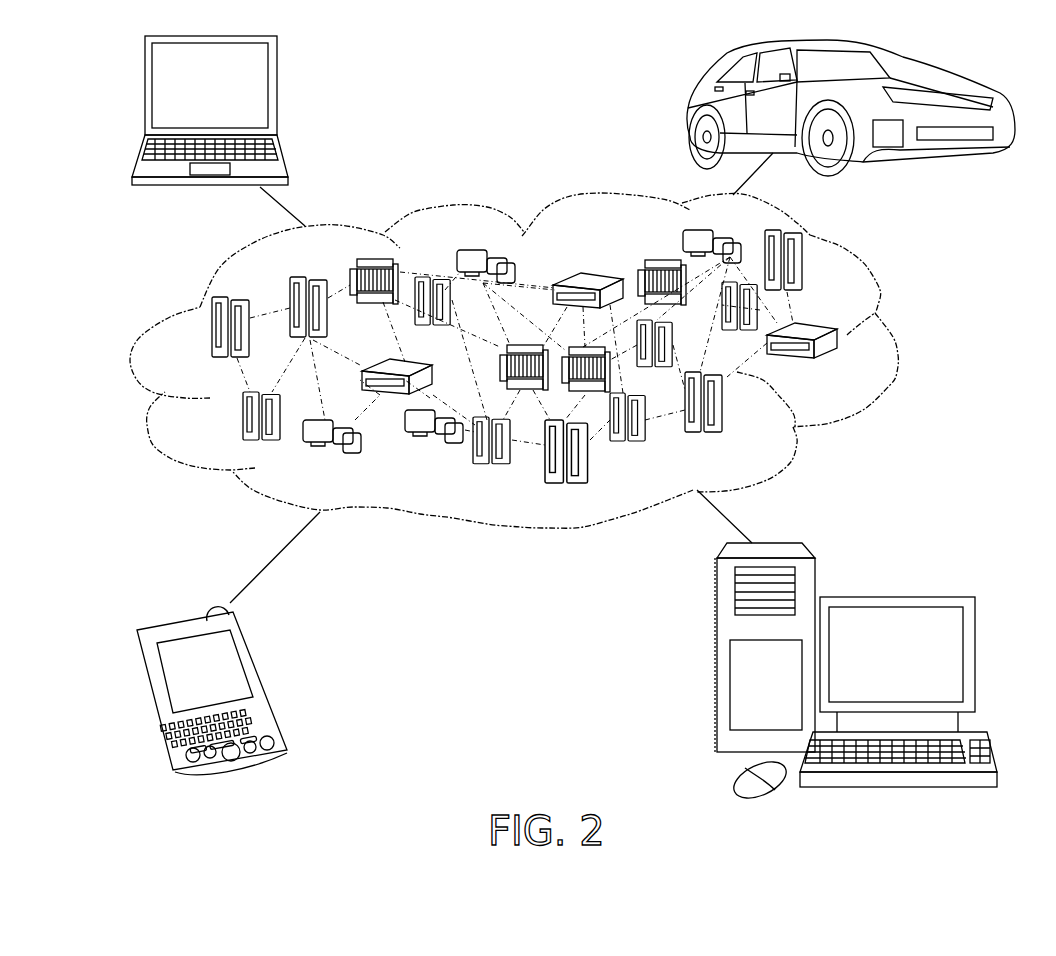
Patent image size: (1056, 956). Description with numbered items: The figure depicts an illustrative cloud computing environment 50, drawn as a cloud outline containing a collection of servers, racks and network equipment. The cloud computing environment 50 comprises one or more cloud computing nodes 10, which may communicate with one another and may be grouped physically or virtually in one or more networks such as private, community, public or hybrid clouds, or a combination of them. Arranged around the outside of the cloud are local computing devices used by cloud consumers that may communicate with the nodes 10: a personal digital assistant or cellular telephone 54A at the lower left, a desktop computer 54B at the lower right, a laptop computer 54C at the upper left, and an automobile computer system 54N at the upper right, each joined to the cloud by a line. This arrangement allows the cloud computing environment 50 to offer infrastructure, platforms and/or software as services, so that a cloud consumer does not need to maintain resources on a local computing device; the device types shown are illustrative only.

The cloud computing node 10 is at (842, 365).
The cloud computing environment 50 is at (895, 335).
The personal digital assistant or cellular telephone 54A is at (267, 680).
The desktop computer 54B is at (897, 597).
The laptop computer 54C is at (277, 92).
The automobile computer system 54N is at (687, 108).